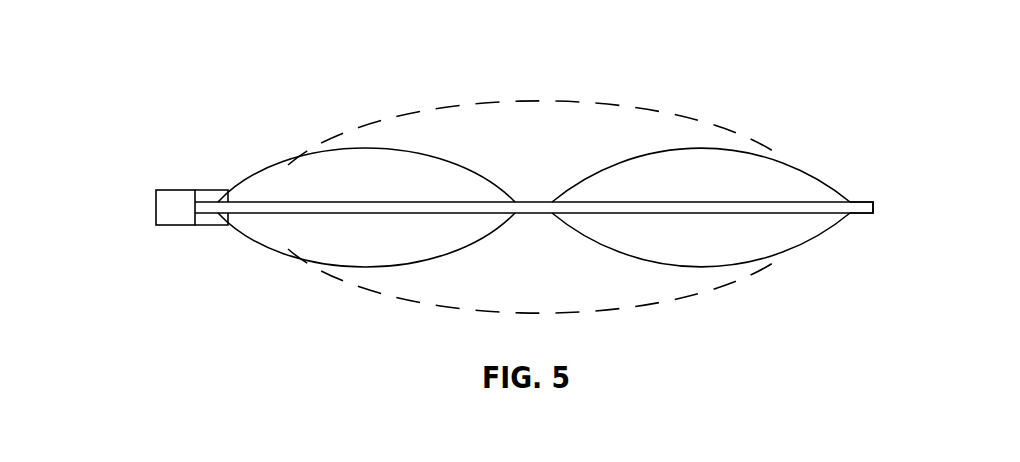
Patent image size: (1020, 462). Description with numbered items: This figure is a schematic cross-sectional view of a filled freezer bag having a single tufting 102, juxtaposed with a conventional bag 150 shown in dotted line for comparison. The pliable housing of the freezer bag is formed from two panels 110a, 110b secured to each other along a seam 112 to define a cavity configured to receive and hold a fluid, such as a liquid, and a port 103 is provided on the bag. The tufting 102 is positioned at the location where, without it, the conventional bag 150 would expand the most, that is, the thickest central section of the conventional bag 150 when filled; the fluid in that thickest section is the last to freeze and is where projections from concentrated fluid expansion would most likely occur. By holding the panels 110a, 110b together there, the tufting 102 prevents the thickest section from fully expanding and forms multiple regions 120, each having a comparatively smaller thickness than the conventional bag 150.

The tufting 102 is at (536, 202).
The port 103 is at (154, 205).
The seam 112 is at (205, 190).
The panel 110a is at (323, 150).
The panel 110b is at (322, 265).
The region 120 is at (372, 172).
The conventional bag 150 is at (500, 96).